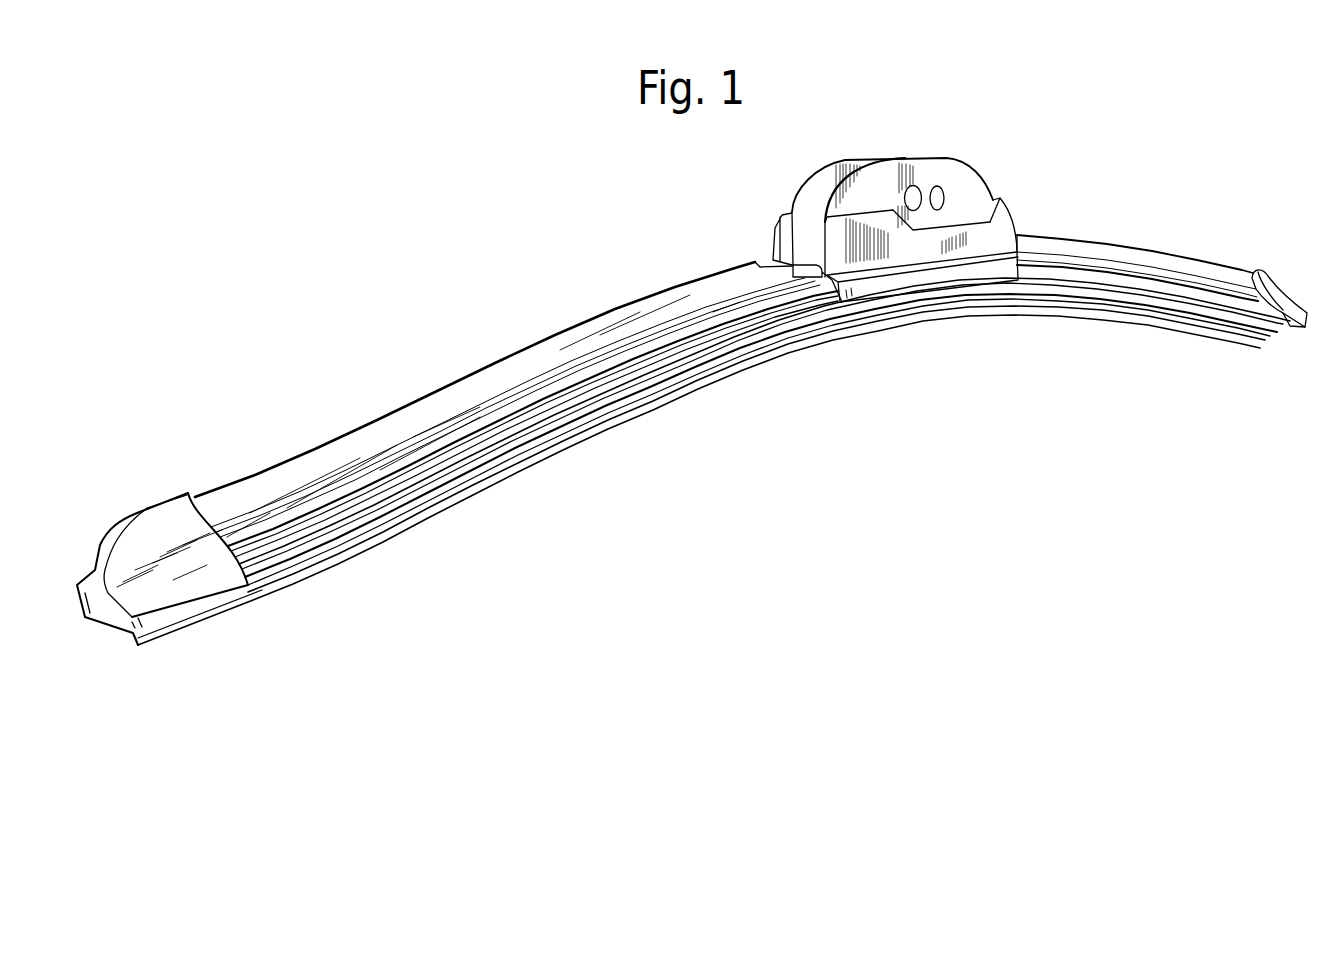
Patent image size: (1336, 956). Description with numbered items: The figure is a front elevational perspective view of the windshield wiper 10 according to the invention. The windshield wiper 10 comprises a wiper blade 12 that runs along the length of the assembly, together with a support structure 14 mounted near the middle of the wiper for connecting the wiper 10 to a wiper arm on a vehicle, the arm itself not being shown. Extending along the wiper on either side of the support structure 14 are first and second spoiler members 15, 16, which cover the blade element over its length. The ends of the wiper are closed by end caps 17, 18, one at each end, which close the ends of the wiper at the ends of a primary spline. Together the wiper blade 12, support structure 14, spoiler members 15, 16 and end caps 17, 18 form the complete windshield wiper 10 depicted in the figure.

The windshield wiper 10 is at (430, 330).
The wiper blade 12 is at (561, 450).
The support structure 14 is at (962, 178).
The second spoiler member 15 is at (1123, 254).
The first spoiler member 16 is at (635, 322).
The end cap 17 is at (1272, 283).
The end cap 18 is at (167, 515).